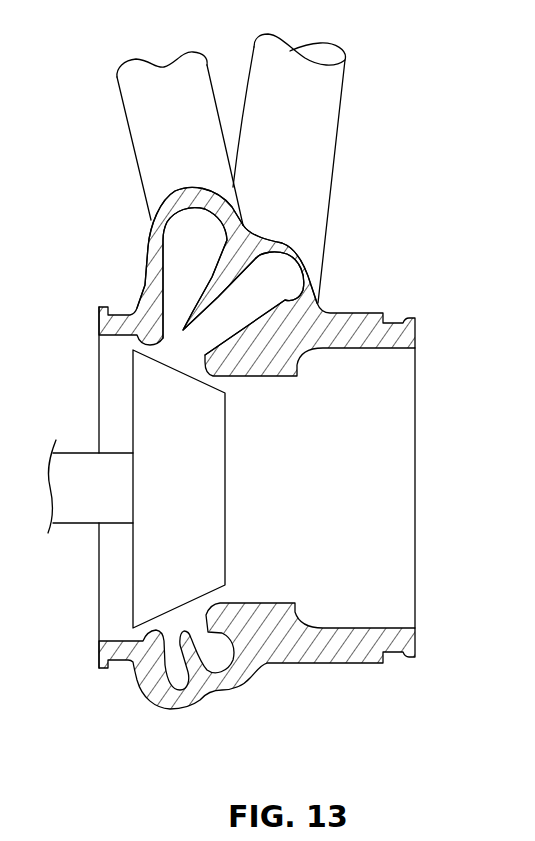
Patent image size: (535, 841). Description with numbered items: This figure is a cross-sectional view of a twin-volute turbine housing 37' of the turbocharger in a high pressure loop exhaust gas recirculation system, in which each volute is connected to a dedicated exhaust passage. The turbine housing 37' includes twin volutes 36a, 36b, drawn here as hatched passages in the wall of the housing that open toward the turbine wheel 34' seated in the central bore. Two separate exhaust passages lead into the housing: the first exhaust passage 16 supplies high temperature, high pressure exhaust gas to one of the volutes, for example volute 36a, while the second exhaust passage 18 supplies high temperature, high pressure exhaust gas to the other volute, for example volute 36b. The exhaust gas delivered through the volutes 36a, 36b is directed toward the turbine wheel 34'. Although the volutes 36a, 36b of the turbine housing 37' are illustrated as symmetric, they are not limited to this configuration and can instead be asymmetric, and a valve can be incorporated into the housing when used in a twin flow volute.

The first exhaust passage 16 is at (310, 152).
The second exhaust passage 18 is at (128, 124).
The turbine wheel 34' is at (179, 489).
The volute 36a is at (182, 240).
The volute 36b is at (277, 270).
The turbine housing 37' is at (257, 448).